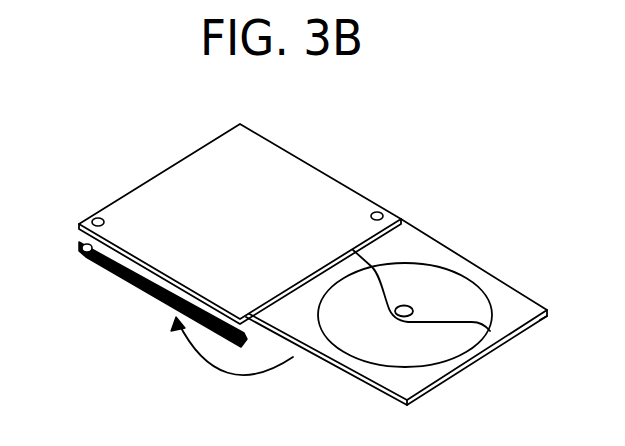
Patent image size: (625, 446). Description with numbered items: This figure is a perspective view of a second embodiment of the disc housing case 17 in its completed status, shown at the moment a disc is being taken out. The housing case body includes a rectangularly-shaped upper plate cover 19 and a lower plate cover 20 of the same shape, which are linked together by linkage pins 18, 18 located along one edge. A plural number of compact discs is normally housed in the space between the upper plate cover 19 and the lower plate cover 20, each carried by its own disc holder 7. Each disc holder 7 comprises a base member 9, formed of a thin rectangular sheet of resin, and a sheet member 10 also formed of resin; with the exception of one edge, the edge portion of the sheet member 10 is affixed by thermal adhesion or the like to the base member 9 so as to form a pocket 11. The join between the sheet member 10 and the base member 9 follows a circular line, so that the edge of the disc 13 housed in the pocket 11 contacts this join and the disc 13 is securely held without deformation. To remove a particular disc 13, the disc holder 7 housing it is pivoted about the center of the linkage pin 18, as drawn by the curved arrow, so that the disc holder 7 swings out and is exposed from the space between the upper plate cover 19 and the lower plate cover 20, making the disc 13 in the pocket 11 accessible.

The disc holder 7 is at (476, 263).
The base member 9 is at (527, 306).
The sheet member 10 is at (431, 377).
The pocket 11 is at (431, 319).
The disc 13 is at (338, 350).
The disc housing case 17 is at (230, 233).
The linkage pin 18 is at (105, 222).
The upper plate cover 19 is at (315, 180).
The lower plate cover 20 is at (88, 257).